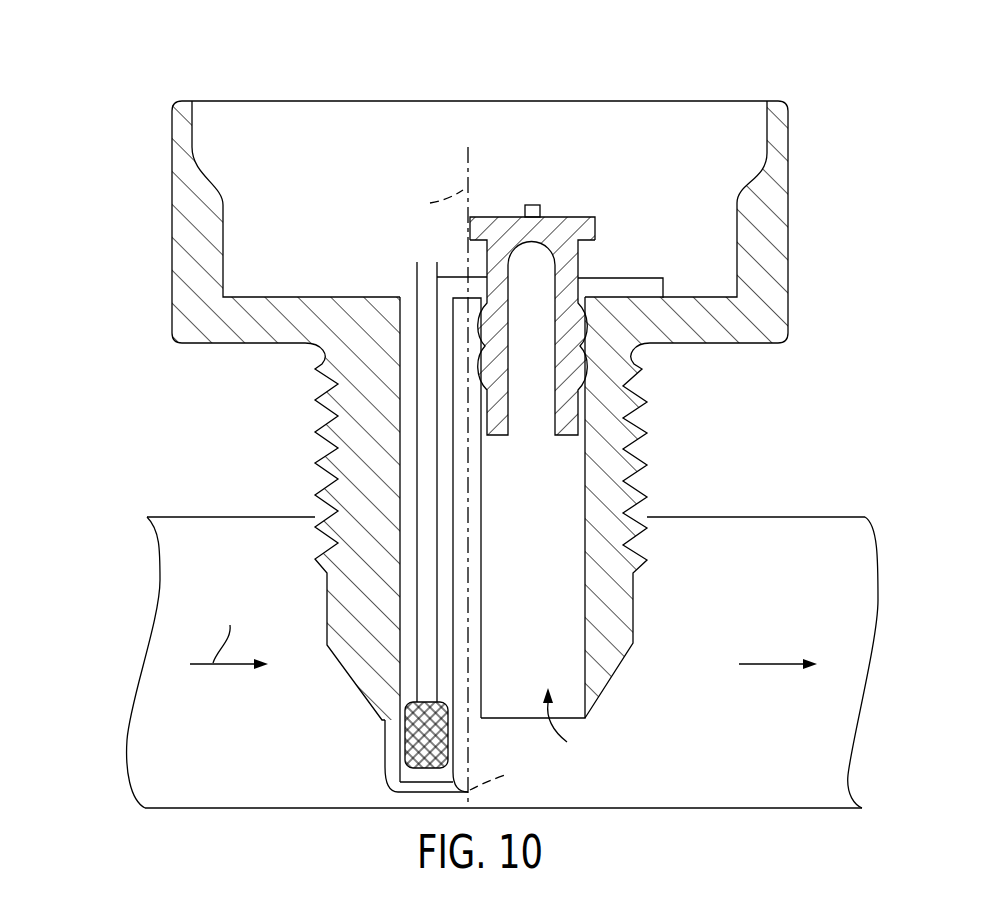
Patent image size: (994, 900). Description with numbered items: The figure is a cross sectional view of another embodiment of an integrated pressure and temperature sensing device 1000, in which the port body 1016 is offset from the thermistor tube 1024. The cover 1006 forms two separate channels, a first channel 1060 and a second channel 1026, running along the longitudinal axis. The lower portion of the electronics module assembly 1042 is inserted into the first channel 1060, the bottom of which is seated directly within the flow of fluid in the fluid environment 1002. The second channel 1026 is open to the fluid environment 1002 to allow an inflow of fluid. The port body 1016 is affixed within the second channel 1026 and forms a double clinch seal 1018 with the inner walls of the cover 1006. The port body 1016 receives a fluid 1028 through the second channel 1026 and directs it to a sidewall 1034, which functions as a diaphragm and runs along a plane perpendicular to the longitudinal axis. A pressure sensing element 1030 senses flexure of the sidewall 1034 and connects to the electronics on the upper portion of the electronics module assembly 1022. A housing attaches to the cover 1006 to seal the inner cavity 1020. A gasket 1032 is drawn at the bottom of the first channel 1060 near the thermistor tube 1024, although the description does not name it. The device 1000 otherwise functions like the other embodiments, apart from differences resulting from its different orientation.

The integrated pressure and temperature sensing device 1000 is at (131, 89).
The fluid environment 1002 is at (828, 532).
The cover 1006 is at (633, 350).
The port body 1016 is at (573, 262).
The double clinch seal 1018 is at (480, 303).
The inner cavity 1020 is at (293, 127).
The upper portion of the electronics module assembly 1022 is at (425, 343).
The thermistor tube 1024 is at (465, 752).
The second channel 1026 is at (563, 730).
The fluid 1028 is at (563, 502).
The pressure sensing element 1030 is at (533, 204).
The gasket 1032 is at (418, 737).
The sidewall 1034 is at (565, 217).
The lower portion of the electronics module assembly 1042 is at (425, 532).
The first channel 1060 is at (393, 310).